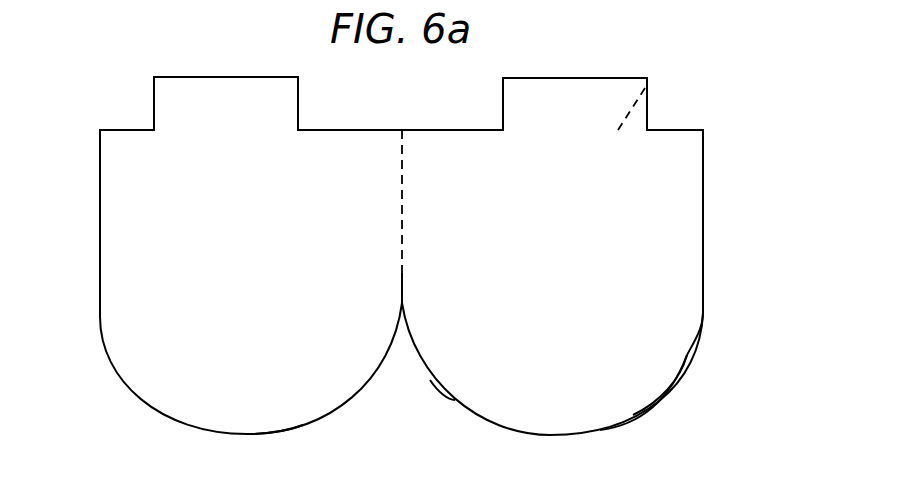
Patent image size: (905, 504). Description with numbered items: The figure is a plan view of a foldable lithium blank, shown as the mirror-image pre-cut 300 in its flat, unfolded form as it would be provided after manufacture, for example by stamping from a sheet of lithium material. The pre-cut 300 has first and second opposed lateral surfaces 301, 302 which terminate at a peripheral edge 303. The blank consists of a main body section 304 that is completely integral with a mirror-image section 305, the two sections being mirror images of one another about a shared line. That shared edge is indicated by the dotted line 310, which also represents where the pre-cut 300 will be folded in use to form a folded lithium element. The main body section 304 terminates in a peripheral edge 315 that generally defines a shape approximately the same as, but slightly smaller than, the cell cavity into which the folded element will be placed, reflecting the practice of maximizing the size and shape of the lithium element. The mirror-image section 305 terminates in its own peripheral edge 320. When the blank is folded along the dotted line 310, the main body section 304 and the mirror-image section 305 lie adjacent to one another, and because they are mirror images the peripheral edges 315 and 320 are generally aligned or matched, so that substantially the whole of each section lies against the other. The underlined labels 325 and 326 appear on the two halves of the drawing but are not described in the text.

The mirror-image pre-cut 300 is at (740, 248).
The first lateral surface 301 is at (600, 352).
The second lateral surface 302 is at (643, 93).
The peripheral edge 303 is at (687, 355).
The main body section 304 is at (455, 400).
The mirror-image section 305 is at (303, 425).
The dotted line 310 is at (403, 200).
The peripheral edge of main body section 315 is at (633, 415).
The peripheral edge of mirror-image section 320 is at (102, 317).
The right lens portion 325 is at (500, 267).
The left lens portion 326 is at (250, 263).